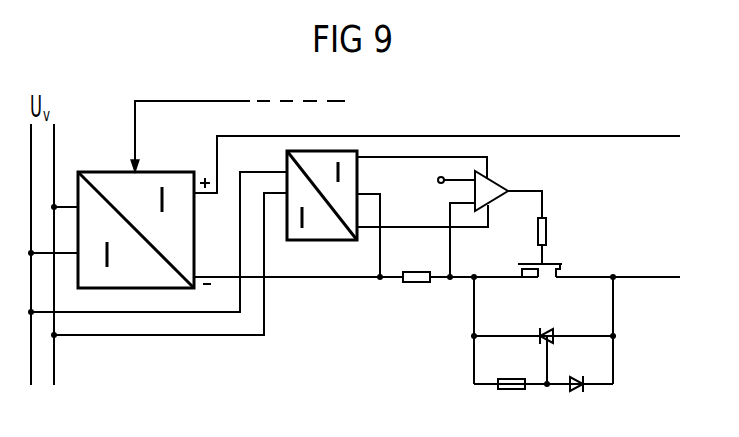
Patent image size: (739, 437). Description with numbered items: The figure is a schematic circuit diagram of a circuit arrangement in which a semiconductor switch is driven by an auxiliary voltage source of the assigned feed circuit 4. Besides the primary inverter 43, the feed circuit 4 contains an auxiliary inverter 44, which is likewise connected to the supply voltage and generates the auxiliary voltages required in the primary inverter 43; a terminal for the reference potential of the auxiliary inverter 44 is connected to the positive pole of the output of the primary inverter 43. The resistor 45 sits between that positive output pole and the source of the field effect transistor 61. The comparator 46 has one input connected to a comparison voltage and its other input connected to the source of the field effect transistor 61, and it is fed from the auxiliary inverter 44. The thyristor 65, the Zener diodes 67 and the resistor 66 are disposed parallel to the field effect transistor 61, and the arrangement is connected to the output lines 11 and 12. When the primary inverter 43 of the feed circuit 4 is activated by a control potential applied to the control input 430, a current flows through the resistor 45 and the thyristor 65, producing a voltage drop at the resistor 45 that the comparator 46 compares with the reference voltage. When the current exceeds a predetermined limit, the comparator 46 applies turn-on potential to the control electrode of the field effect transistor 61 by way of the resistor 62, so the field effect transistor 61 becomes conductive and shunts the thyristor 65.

The feed circuit 4 is at (403, 126).
The first output line 11 is at (447, 155).
The second output line 12 is at (447, 279).
The primary inverter 43 is at (144, 214).
The control input 430 is at (238, 139).
The auxiliary inverter 44 is at (387, 214).
The resistor 45 is at (416, 295).
The comparator 46 is at (467, 214).
The field effect transistor 61 is at (528, 257).
The resistor 62 is at (555, 237).
The thyristor 65 is at (548, 318).
The resistor 66 is at (511, 402).
The Zener diodes 67 is at (578, 401).